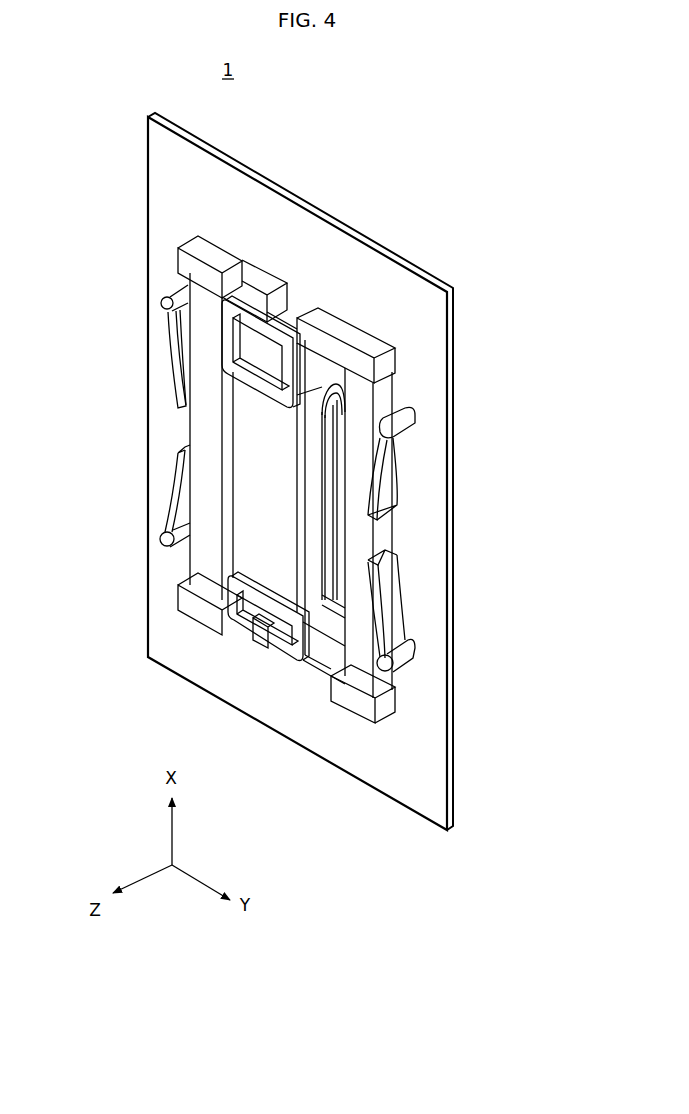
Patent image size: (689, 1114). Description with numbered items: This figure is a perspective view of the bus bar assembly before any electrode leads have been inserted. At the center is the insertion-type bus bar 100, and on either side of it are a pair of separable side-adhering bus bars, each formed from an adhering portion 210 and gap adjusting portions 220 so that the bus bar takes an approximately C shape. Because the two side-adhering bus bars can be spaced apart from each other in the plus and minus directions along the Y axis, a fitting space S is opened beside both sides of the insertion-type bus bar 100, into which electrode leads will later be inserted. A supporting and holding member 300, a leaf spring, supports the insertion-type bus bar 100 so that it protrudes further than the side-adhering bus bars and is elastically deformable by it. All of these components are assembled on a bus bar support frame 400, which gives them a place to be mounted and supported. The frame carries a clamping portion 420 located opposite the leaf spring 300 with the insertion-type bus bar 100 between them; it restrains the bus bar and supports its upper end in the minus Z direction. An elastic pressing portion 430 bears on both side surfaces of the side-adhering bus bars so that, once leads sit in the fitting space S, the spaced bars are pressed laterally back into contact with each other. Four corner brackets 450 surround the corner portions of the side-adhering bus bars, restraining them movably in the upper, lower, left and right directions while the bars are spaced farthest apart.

The insertion-type bus bar 100 is at (258, 448).
The adhering portion 210 is at (210, 557).
The gap adjusting portion 220 is at (315, 333).
The supporting and holding member 300 is at (330, 386).
The bus bar support frame 400 is at (468, 424).
The clamping portion 420 is at (252, 382).
The elastic pressing portion 430 is at (178, 386).
The corner bracket 450 is at (193, 268).
The fitting space S is at (328, 607).